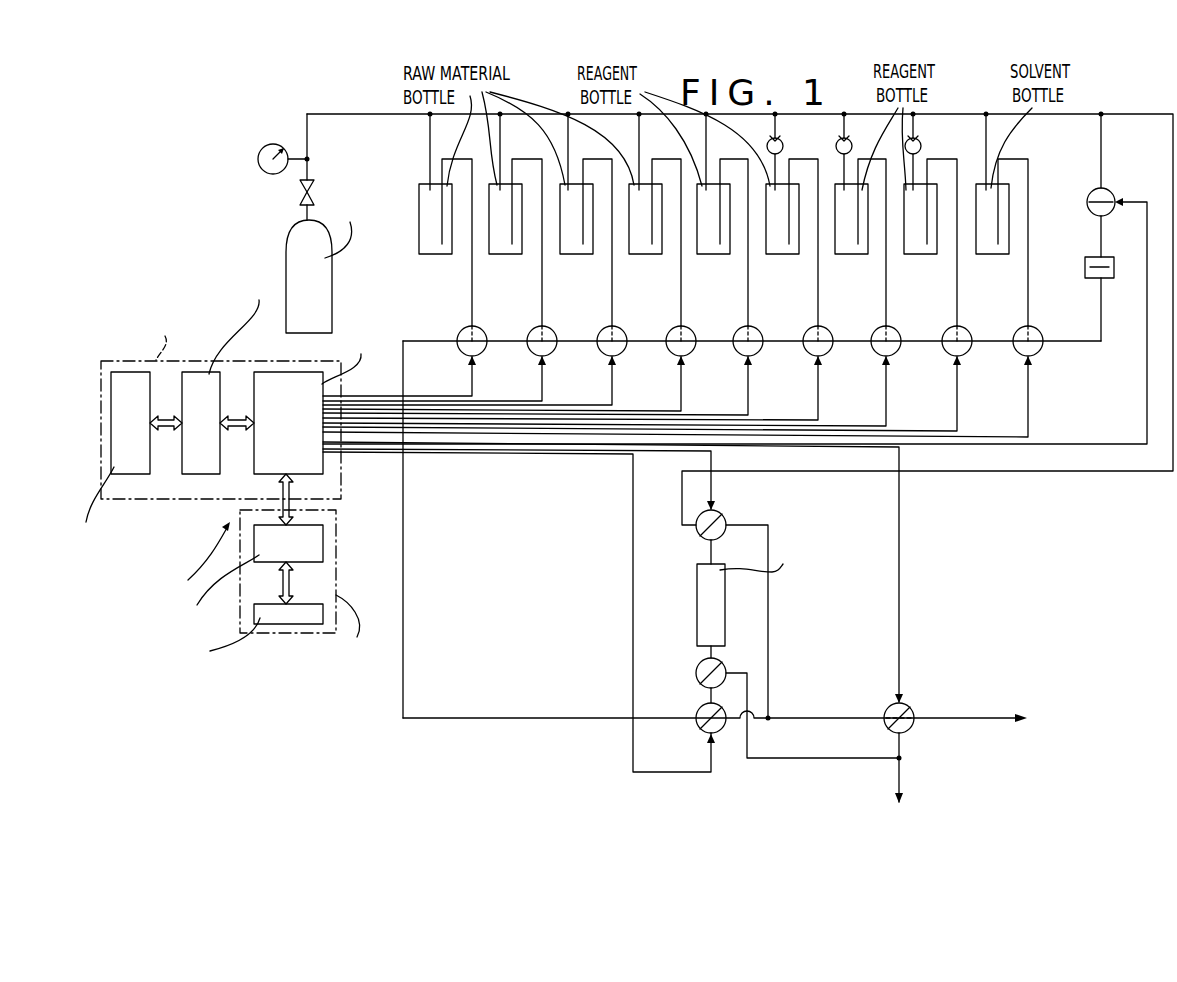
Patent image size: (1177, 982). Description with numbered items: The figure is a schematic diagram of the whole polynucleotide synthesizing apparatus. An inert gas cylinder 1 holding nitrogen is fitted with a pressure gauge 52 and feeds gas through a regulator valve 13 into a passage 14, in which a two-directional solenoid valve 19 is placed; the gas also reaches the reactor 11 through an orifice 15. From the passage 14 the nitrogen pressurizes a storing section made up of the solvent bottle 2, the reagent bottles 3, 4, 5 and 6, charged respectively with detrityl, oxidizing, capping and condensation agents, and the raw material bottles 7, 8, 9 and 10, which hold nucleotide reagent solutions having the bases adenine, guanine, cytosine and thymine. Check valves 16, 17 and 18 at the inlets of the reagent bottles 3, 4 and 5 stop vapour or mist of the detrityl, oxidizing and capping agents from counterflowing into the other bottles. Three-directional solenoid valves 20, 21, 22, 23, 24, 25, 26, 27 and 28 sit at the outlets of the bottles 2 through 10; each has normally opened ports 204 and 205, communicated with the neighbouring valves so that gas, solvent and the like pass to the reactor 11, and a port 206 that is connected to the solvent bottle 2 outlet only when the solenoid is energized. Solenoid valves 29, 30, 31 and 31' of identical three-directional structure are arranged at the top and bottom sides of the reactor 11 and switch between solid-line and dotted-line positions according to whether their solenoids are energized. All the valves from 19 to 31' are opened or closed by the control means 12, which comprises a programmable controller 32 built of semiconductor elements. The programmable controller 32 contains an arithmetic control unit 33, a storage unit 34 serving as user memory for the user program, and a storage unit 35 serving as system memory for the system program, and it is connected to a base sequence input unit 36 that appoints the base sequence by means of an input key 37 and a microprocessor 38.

The inert gas cylinder 1 is at (314, 287).
The solvent bottle 2 is at (990, 254).
The reagent bottle 3 is at (922, 254).
The reagent bottle 4 is at (845, 254).
The reagent bottle 5 is at (780, 257).
The reagent bottle 6 is at (707, 254).
The raw material bottle 7 is at (638, 254).
The raw material bottle 8 is at (570, 254).
The raw material bottle 9 is at (504, 254).
The raw material bottle 10 is at (444, 254).
The reactor 11 is at (722, 616).
The control means 12 is at (224, 517).
The regulator valve 13 is at (296, 196).
The passage 14 is at (542, 114).
The orifice 15 is at (1085, 259).
The check valve 16 is at (921, 146).
The check valve 17 is at (852, 146).
The check valve 18 is at (783, 146).
The solenoid valve 19 is at (1112, 190).
The solenoid valve 20 is at (1041, 356).
The solenoid valve 21 is at (966, 354).
The solenoid valve 22 is at (895, 352).
The solenoid valve 23 is at (827, 350).
The solenoid valve 24 is at (757, 350).
The solenoid valve 25 is at (690, 349).
The solenoid valve 26 is at (621, 348).
The solenoid valve 27 is at (551, 348).
The solenoid valve 28 is at (481, 347).
The solenoid valve 29 is at (698, 709).
The solenoid valve 30 is at (725, 516).
The solenoid valve 31 is at (639, 622).
The solenoid valve 31' is at (778, 695).
The programmable controller 32 is at (198, 360).
The arithmetic control unit 33 is at (302, 434).
The storage unit (user memory) 34 is at (144, 434).
The storage unit (system memory) 35 is at (215, 434).
The base sequence input unit 36 is at (340, 580).
The input key 37 is at (297, 618).
The microprocessor 38 is at (302, 557).
The pressure gauge 52 is at (258, 154).
The port 204 is at (1064, 331).
The port 205 is at (993, 331).
The port 206 is at (1051, 307).